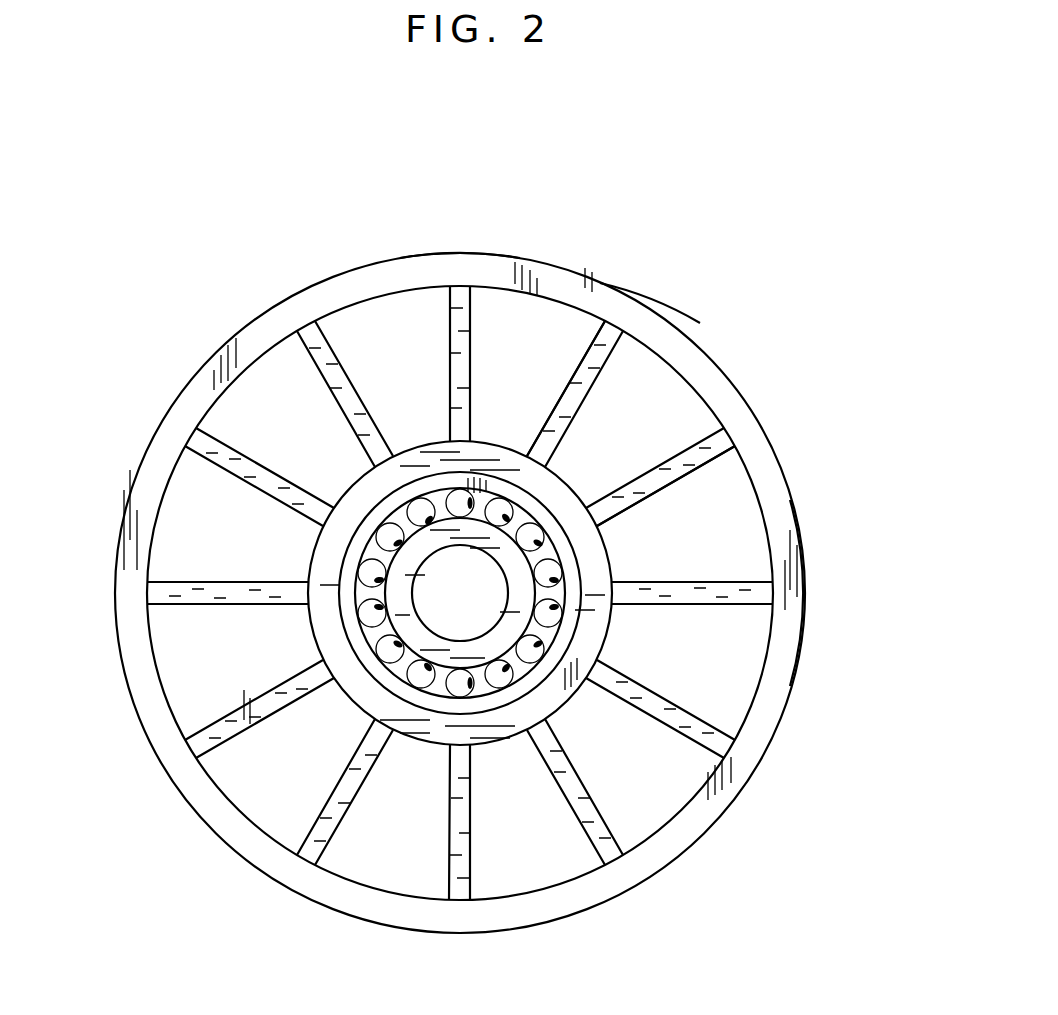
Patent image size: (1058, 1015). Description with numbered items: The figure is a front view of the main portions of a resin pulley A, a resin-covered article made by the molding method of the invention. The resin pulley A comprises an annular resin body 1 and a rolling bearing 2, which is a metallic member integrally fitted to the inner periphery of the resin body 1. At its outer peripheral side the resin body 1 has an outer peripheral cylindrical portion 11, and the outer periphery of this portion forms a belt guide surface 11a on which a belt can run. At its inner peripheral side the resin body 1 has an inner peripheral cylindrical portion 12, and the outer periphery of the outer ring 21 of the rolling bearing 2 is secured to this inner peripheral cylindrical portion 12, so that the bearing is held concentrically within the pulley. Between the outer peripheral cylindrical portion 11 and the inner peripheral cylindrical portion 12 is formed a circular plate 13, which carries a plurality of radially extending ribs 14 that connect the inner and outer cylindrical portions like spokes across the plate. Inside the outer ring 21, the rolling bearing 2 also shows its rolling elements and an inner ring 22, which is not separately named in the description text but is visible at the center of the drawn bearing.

The resin body 1 is at (806, 551).
The rolling bearing 2 is at (528, 587).
The outer peripheral cylindrical portion 11 is at (323, 302).
The belt guide surface 11a is at (456, 253).
The inner peripheral cylindrical portion 12 is at (318, 624).
The circular plate 13 is at (656, 413).
The ribs 14 is at (232, 462).
The outer ring 21 is at (572, 546).
The bearing inner ring 22 is at (540, 623).
The resin pulley A is at (678, 296).